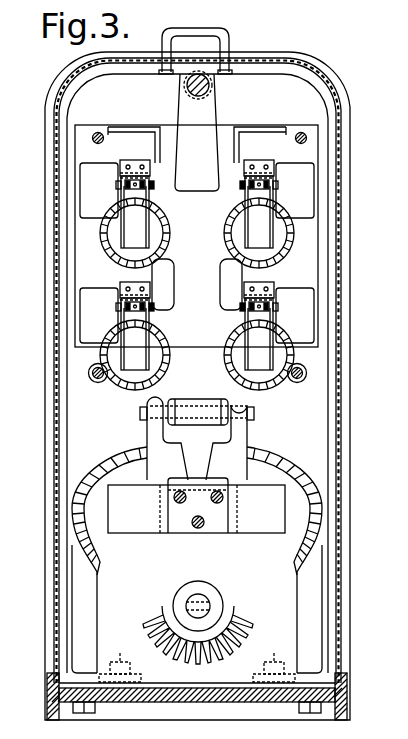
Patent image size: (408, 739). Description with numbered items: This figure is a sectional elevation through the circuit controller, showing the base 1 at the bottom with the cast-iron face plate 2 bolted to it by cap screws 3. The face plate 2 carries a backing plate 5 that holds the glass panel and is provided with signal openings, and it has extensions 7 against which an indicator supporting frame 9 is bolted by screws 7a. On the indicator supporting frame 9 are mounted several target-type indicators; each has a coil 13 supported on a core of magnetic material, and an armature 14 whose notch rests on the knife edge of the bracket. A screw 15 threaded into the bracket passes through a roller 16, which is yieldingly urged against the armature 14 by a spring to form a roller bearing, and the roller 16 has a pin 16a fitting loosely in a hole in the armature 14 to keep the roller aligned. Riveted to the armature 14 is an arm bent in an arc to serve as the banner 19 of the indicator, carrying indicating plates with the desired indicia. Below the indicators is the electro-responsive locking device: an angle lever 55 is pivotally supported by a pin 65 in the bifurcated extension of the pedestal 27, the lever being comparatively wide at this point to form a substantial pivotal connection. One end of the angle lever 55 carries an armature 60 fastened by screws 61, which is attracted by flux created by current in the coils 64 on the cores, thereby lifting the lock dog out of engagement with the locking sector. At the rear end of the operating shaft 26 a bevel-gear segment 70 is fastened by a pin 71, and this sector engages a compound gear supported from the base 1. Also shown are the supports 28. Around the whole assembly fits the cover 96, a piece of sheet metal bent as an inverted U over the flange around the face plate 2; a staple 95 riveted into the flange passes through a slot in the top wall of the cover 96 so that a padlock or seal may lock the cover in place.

The base 1 is at (47, 690).
The face plate 2 is at (78, 430).
The cap screws 3 is at (90, 713).
The backing plate 5 is at (88, 136).
The extensions 7 is at (295, 78).
The screws 7a is at (97, 384).
The indicator supporting frame 9 is at (200, 123).
The coil 13 is at (224, 237).
The armature 14 is at (127, 238).
The screw 15 is at (135, 183).
The roller 16 is at (154, 189).
The pin 16a is at (116, 186).
The banner 19 is at (93, 174).
The operating shaft 26 is at (205, 600).
The pedestal 27 is at (283, 596).
The supports 28 is at (197, 656).
The angle lever 55 is at (197, 399).
The armature 60 is at (145, 522).
The screws 61 is at (213, 500).
The coils 64 is at (117, 457).
The pin 65 is at (254, 414).
The bevel-gear segment 70 is at (222, 624).
The pin 71 is at (184, 600).
The staple 95 is at (222, 34).
The cover 96 is at (272, 62).